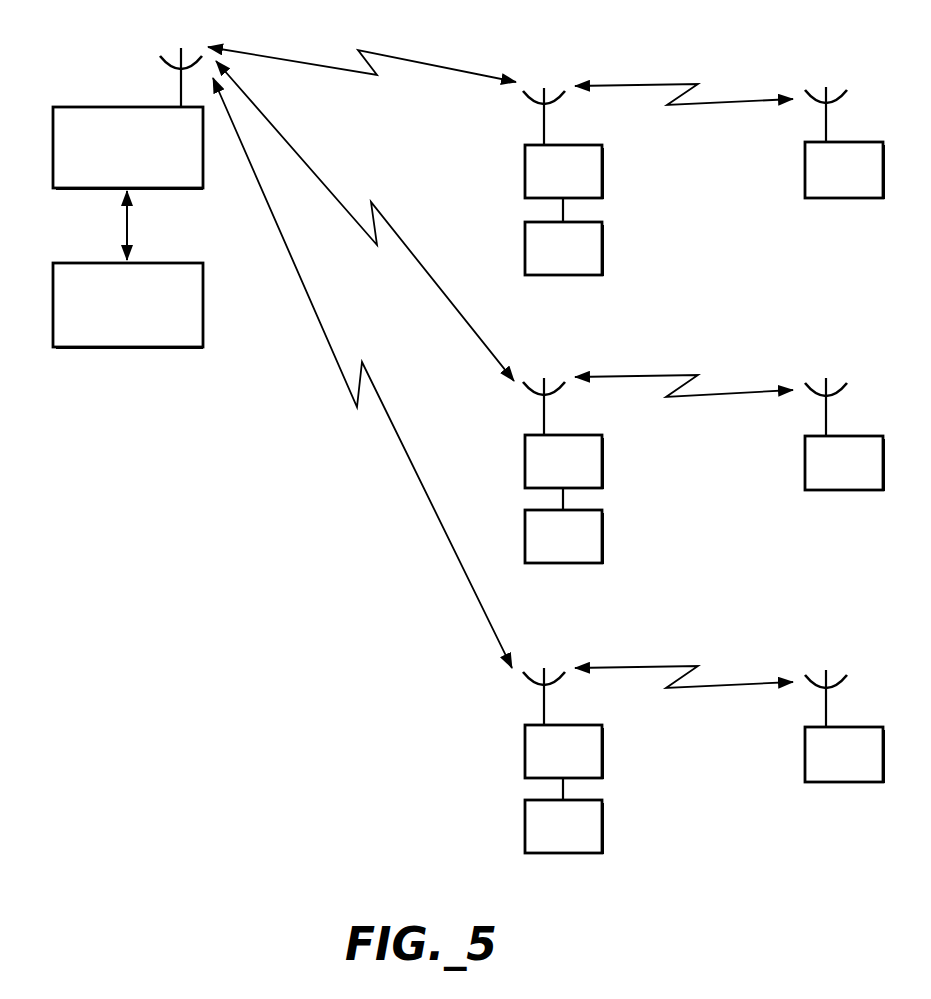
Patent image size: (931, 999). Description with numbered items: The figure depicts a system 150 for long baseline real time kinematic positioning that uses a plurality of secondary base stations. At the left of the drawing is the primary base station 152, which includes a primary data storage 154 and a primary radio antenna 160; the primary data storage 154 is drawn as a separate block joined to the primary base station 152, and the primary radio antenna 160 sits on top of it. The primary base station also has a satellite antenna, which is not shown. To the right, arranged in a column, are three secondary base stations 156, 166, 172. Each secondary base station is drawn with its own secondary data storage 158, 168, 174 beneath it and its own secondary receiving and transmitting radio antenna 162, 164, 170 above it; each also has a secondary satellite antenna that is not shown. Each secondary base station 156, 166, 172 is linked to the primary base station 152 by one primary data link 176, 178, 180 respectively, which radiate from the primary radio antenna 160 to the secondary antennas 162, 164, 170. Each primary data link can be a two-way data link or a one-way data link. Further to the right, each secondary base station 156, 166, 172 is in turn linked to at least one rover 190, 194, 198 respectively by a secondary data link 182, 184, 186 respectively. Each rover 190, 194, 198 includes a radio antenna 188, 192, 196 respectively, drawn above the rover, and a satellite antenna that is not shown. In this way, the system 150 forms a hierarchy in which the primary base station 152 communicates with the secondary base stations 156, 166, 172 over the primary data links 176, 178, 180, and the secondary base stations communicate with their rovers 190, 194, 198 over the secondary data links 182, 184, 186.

The system 150 is at (176, 596).
The primary base station 152 is at (88, 106).
The primary data storage 154 is at (88, 262).
The secondary base station 156 is at (603, 173).
The secondary data storage 158 is at (603, 250).
The primary radio antenna 160 is at (165, 67).
The secondary receiving and transmitting radio antenna 162 is at (535, 113).
The secondary receiving and transmitting radio antenna 164 is at (535, 401).
The secondary base station 166 is at (603, 462).
The secondary data storage 168 is at (603, 537).
The secondary receiving and transmitting radio antenna 170 is at (535, 693).
The secondary base station 172 is at (603, 752).
The secondary data storage 174 is at (603, 827).
The primary data link 176 is at (405, 55).
The primary data link 178 is at (407, 243).
The primary data link 180 is at (377, 383).
The secondary data link 182 is at (648, 82).
The secondary data link 184 is at (648, 373).
The secondary data link 186 is at (648, 664).
The radio antenna 188 is at (812, 110).
The rover 190 is at (805, 167).
The radio antenna 192 is at (812, 404).
The rover 194 is at (805, 462).
The radio antenna 196 is at (812, 695).
The rover 198 is at (805, 755).